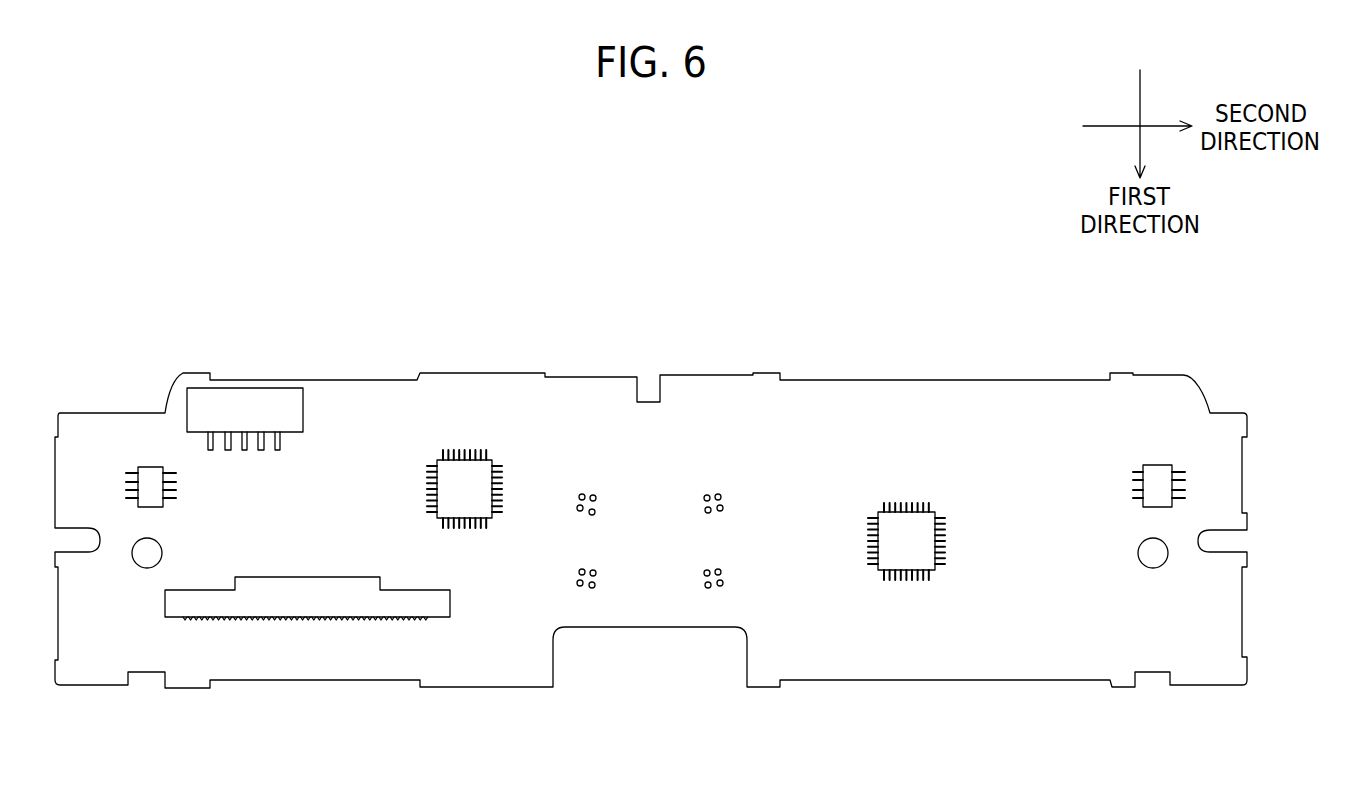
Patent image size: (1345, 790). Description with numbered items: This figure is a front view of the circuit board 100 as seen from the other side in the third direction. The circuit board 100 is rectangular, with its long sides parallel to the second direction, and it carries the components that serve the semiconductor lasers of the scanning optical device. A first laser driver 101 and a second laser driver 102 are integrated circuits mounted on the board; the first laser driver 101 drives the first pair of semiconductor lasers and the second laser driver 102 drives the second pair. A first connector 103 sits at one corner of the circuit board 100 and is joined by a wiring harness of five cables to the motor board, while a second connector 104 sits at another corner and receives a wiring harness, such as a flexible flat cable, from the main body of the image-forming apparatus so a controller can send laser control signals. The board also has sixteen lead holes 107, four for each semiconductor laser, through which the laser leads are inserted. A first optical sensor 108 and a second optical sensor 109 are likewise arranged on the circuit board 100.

The circuit board 100 is at (931, 283).
The first laser driver 101 is at (912, 560).
The second laser driver 102 is at (467, 475).
The first connector 103 is at (253, 400).
The second connector 104 is at (338, 610).
The lead holes 107 is at (722, 511).
The first optical sensor 108 is at (1160, 475).
The second optical sensor 109 is at (148, 477).